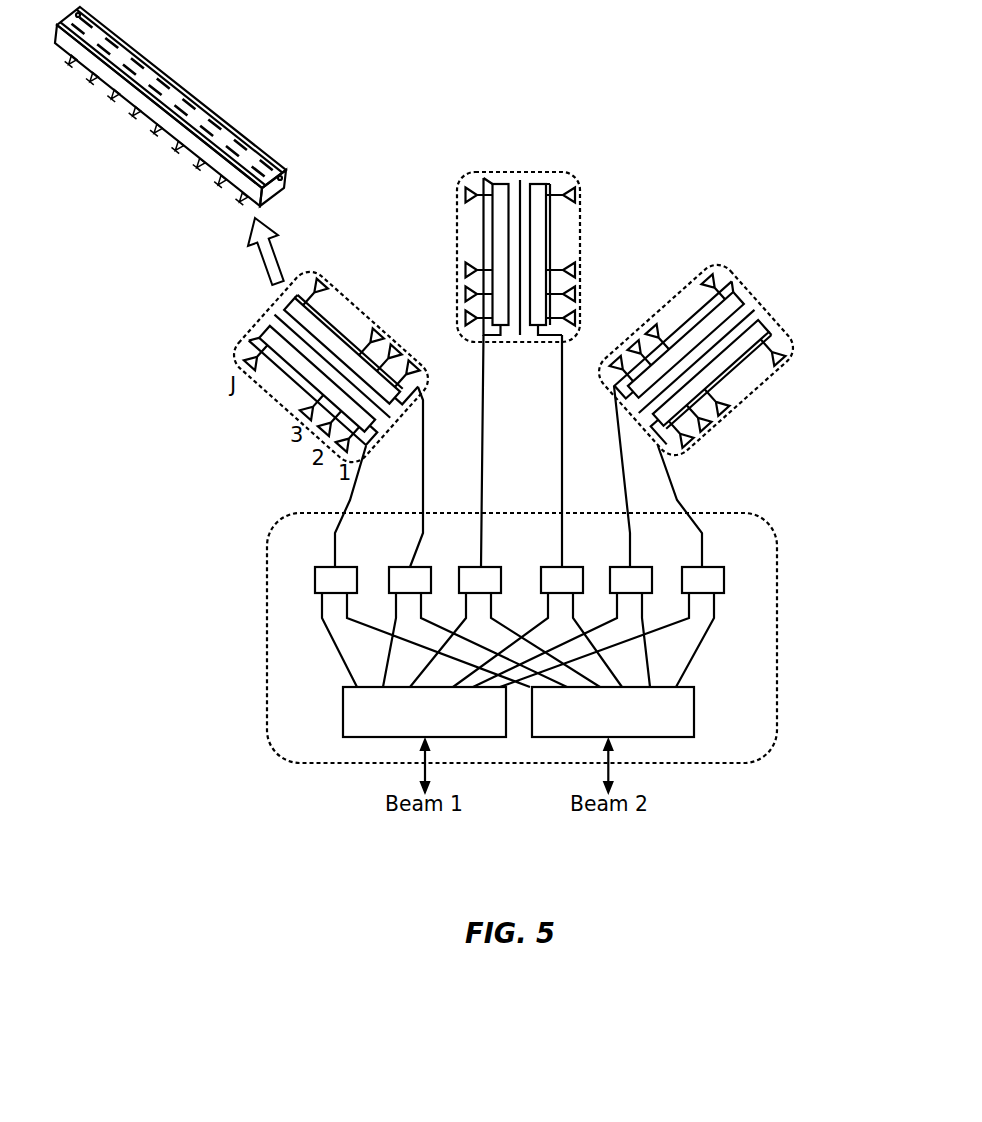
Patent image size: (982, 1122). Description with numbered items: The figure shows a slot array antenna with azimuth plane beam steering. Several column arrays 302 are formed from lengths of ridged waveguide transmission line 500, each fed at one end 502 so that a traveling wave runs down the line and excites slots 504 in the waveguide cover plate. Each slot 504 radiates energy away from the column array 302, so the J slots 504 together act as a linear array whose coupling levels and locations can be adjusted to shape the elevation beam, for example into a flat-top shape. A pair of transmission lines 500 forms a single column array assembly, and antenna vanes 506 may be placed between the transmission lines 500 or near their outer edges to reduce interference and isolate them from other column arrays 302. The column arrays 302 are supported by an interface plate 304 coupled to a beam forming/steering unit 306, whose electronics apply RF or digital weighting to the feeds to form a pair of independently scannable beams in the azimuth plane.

The column array 302 is at (330, 268).
The transmission line 500 is at (222, 177).
The one end 502 is at (509, 328).
The slot 504 is at (313, 428).
The antenna vane 506 is at (550, 184).
The interface plate 304 is at (767, 518).
The beam forming/steering unit 306 is at (307, 728).